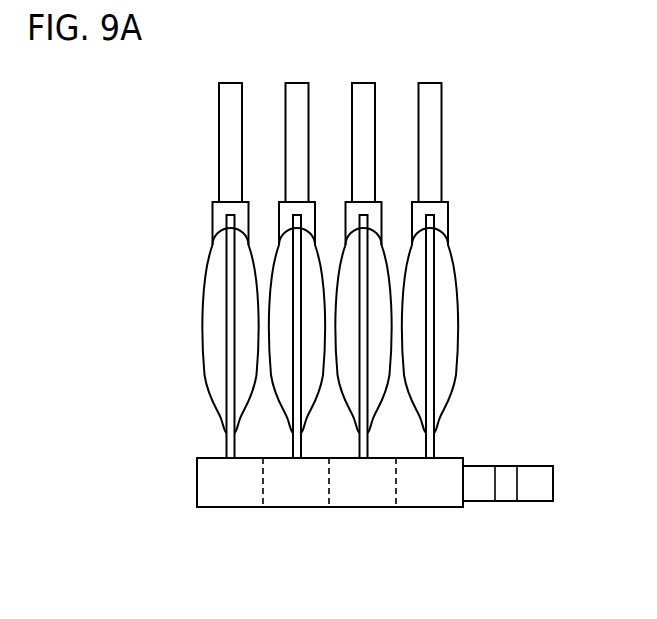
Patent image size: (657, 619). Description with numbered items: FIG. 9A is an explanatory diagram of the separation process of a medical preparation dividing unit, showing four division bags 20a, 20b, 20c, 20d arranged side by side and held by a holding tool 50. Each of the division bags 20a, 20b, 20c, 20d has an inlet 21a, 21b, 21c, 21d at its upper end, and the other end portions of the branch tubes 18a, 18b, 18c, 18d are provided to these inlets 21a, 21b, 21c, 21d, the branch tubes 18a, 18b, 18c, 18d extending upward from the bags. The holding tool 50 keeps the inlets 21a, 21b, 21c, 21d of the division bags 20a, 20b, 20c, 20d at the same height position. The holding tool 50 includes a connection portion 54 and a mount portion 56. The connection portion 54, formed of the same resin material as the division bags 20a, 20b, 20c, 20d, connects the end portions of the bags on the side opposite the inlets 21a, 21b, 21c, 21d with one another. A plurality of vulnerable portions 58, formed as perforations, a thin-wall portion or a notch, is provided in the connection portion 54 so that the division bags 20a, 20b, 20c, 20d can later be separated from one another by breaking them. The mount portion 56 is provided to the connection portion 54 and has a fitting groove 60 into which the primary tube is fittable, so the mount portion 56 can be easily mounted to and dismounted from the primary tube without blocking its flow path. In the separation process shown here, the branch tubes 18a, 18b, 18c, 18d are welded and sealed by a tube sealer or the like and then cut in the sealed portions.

The branch tube 18a is at (230, 82).
The branch tube 18b is at (296, 82).
The branch tube 18c is at (362, 82).
The branch tube 18d is at (428, 82).
The inlet 21a is at (218, 215).
The inlet 21b is at (287, 208).
The inlet 21c is at (375, 208).
The inlet 21d is at (437, 217).
The division bag 20a is at (220, 287).
The division bag 20b is at (284, 347).
The division bag 20c is at (378, 302).
The division bag 20d is at (447, 353).
The holding tool 50 is at (374, 521).
The connection portion 54 is at (210, 482).
The mount portion 56 is at (553, 483).
The vulnerable portion 58 is at (329, 490).
The fitting groove 60 is at (506, 488).